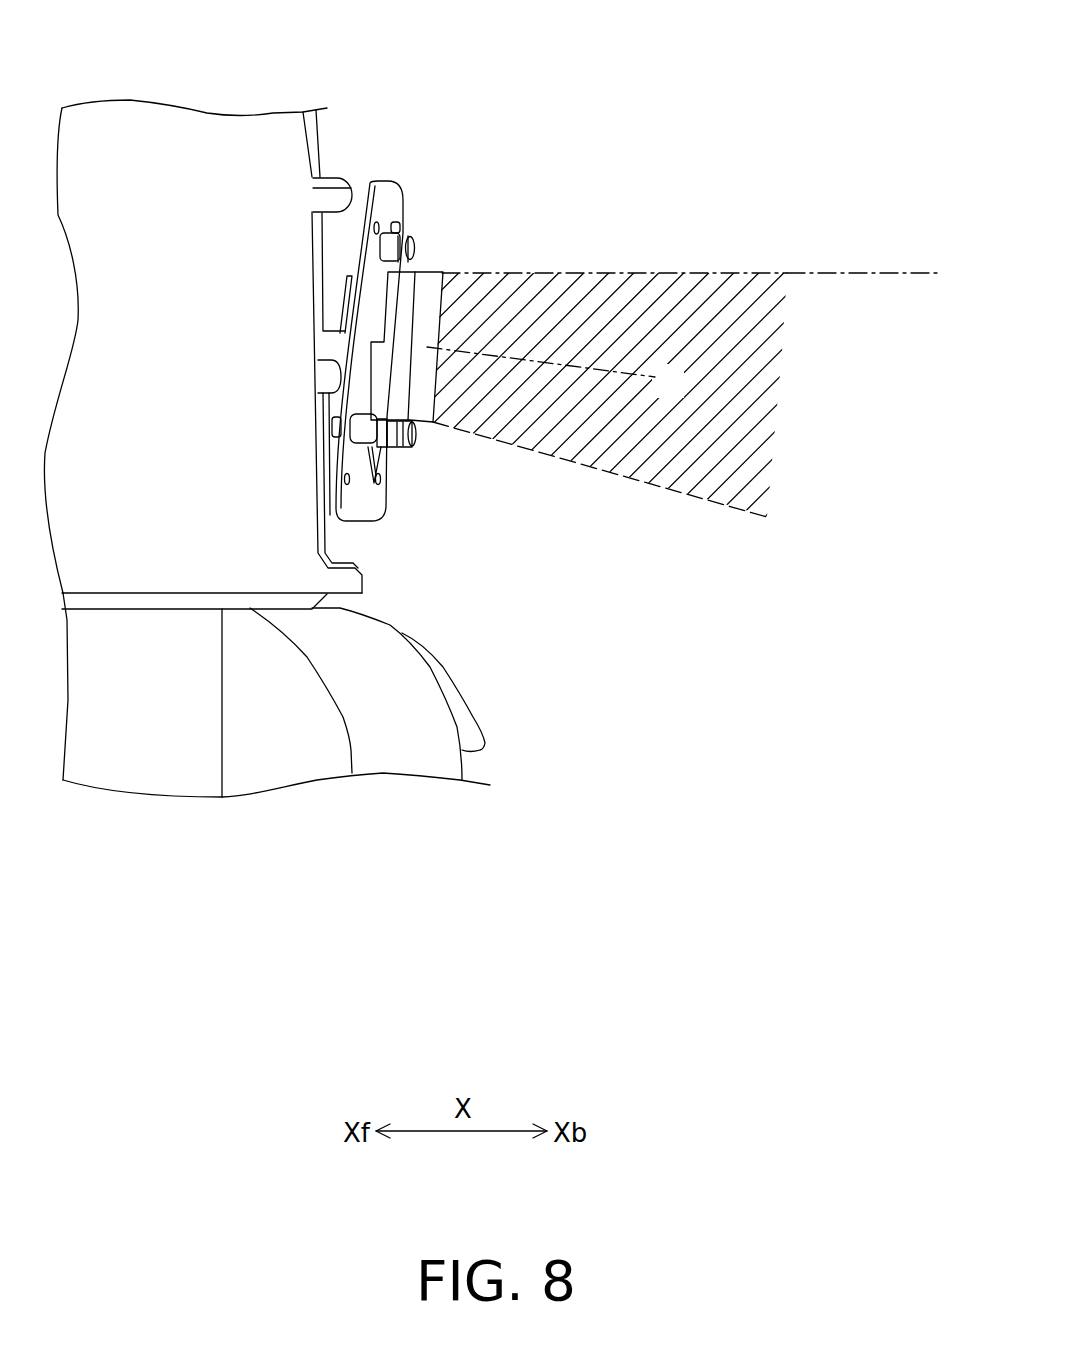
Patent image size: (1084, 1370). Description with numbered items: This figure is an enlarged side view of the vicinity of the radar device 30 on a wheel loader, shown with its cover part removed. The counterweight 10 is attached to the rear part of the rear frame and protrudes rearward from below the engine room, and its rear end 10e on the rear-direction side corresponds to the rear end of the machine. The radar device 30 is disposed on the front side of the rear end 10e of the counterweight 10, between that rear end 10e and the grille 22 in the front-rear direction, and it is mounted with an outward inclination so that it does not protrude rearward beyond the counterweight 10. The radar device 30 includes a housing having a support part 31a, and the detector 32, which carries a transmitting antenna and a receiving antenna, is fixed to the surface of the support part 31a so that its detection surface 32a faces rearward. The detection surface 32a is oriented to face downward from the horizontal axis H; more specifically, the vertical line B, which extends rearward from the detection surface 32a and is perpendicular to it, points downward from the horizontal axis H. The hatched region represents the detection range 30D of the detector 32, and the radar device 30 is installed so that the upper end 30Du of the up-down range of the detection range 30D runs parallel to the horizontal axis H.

The counterweight 10 is at (313, 784).
The rear end 10e is at (485, 743).
The grille 22 is at (205, 150).
The radar device 30 is at (591, 312).
The support part 31a is at (390, 197).
The detector 32 is at (400, 291).
The detection surface 32a is at (427, 383).
The detection range 30D is at (591, 393).
The upper end 30Du is at (633, 272).
The horizontal axis H is at (877, 272).
The vertical line B is at (553, 373).